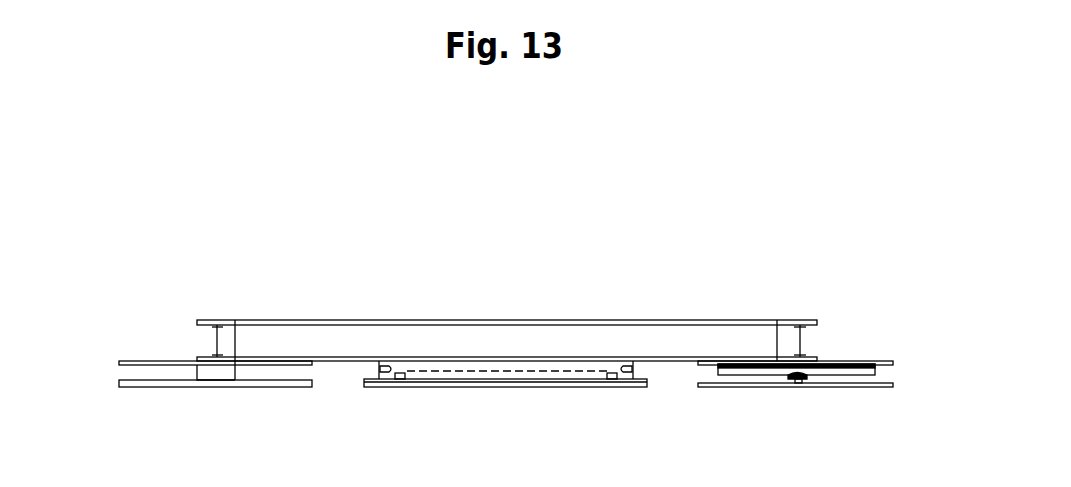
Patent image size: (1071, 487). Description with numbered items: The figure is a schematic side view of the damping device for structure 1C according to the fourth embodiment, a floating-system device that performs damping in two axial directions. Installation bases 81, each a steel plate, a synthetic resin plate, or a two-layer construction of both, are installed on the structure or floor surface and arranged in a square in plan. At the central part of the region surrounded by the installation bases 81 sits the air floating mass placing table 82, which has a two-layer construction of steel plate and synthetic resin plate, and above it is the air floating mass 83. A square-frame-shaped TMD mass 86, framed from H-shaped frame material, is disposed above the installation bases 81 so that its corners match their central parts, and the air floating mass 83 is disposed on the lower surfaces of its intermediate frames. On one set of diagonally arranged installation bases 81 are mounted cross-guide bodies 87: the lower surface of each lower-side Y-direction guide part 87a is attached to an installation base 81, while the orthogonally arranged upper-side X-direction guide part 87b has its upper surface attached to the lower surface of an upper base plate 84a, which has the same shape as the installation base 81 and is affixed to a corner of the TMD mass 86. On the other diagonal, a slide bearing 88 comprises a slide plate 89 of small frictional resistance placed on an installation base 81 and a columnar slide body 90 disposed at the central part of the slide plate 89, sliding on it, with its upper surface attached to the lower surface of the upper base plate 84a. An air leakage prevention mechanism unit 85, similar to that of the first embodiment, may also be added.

The damping device for structure 1C is at (311, 279).
The installation base 81 is at (142, 390).
The air floating mass placing table 82 is at (505, 348).
The air floating mass 83 is at (498, 370).
The upper base plate 84a is at (140, 361).
The air leakage prevention mechanism unit 85 is at (402, 380).
The TMD mass 86 is at (619, 310).
The cross-guide body 87 is at (803, 420).
The Y-direction guide part 87a is at (810, 378).
The X-direction guide part 87b is at (750, 368).
The slide bearing 88 is at (139, 348).
The slide plate 89 is at (178, 378).
The columnar slide body 90 is at (215, 370).